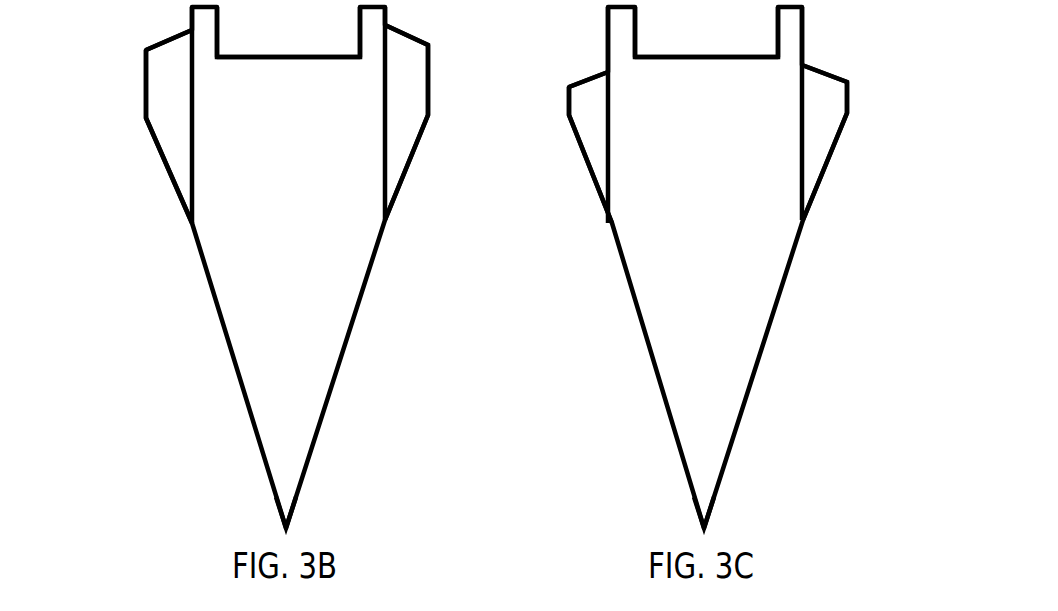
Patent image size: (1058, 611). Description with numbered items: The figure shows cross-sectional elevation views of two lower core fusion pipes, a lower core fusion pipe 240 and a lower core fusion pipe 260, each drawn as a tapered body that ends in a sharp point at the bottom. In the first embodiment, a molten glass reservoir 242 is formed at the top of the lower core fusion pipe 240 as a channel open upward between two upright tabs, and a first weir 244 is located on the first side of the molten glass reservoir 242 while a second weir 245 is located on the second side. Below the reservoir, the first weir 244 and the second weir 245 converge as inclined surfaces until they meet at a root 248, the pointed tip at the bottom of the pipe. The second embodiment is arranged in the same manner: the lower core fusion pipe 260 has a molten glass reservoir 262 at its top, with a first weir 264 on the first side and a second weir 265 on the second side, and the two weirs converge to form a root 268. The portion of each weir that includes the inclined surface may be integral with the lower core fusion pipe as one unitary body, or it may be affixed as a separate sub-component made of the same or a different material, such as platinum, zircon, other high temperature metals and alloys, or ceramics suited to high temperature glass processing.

In FIG. 3B, the lower core fusion pipe 240 is at (265, 342).
In FIG. 3B, the molten glass reservoir 242 is at (303, 60).
In FIG. 3B, the first weir 244 is at (408, 68).
In FIG. 3B, the second weir 245 is at (176, 68).
In FIG. 3B, the root 248 is at (283, 527).
In FIG. 3C, the lower core fusion pipe 260 is at (686, 342).
In FIG. 3C, the molten glass reservoir 262 is at (722, 60).
In FIG. 3C, the first weir 264 is at (825, 101).
In FIG. 3C, the second weir 265 is at (597, 106).
In FIG. 3C, the root 268 is at (701, 527).